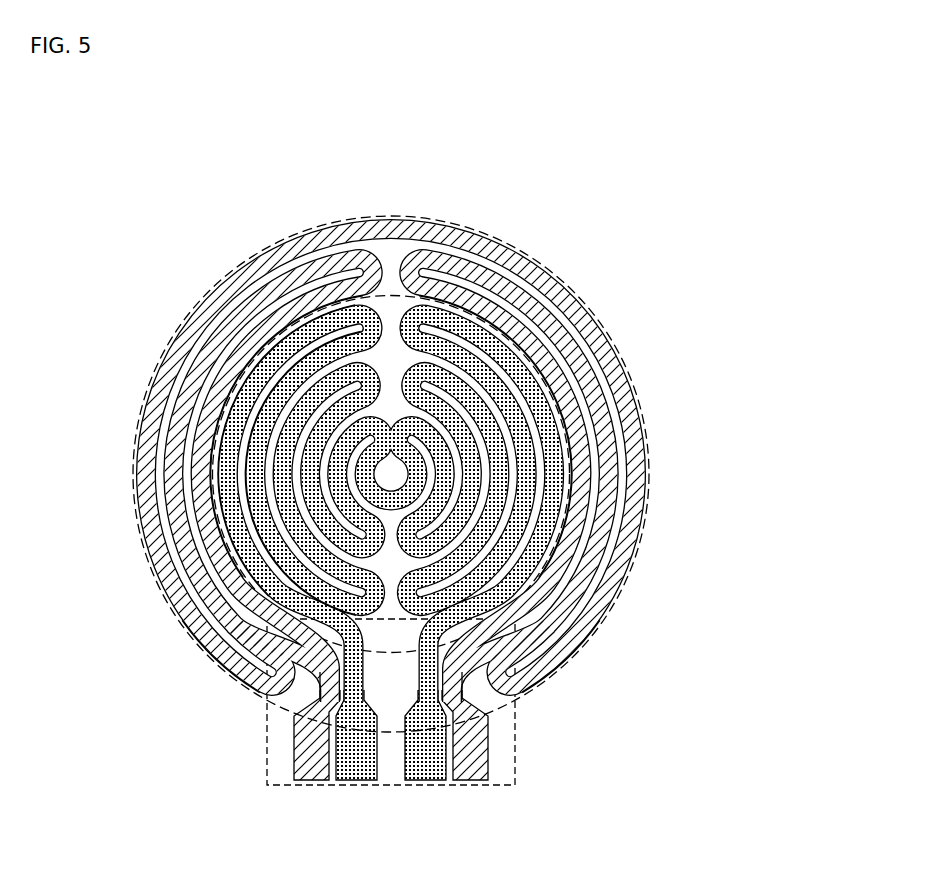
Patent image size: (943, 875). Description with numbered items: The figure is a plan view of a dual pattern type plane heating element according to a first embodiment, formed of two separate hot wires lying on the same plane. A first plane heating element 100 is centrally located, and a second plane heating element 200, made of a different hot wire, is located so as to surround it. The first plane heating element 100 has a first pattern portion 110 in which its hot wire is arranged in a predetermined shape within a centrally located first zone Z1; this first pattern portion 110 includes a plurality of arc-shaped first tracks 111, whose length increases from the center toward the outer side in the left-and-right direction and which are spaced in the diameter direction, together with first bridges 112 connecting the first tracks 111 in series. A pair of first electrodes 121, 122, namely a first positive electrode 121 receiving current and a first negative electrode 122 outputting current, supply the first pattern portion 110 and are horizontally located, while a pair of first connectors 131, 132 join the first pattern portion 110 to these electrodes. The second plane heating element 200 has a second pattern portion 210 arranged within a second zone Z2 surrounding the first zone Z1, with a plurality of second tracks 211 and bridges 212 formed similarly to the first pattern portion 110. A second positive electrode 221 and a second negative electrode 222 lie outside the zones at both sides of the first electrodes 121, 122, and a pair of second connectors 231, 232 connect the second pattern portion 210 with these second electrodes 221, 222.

The first plane heating element 100 is at (373, 570).
The first pattern portion 110 is at (205, 460).
The first tracks 111 is at (325, 352).
The first bridges 112 is at (356, 318).
The first positive electrode 121 is at (357, 774).
The first negative electrode 122 is at (425, 774).
The first connector 131 is at (272, 672).
The first connector 132 is at (511, 672).
The second plane heating element 200 is at (454, 469).
The second pattern portion 210 is at (391, 340).
The second tracks 211 is at (312, 268).
The bridges 212 is at (376, 289).
The second positive electrode 221 is at (311, 774).
The second negative electrode 222 is at (469, 774).
The second connector 231 is at (316, 682).
The second connector 232 is at (466, 682).
The first zone Z1 is at (575, 378).
The second zone Z2 is at (652, 441).